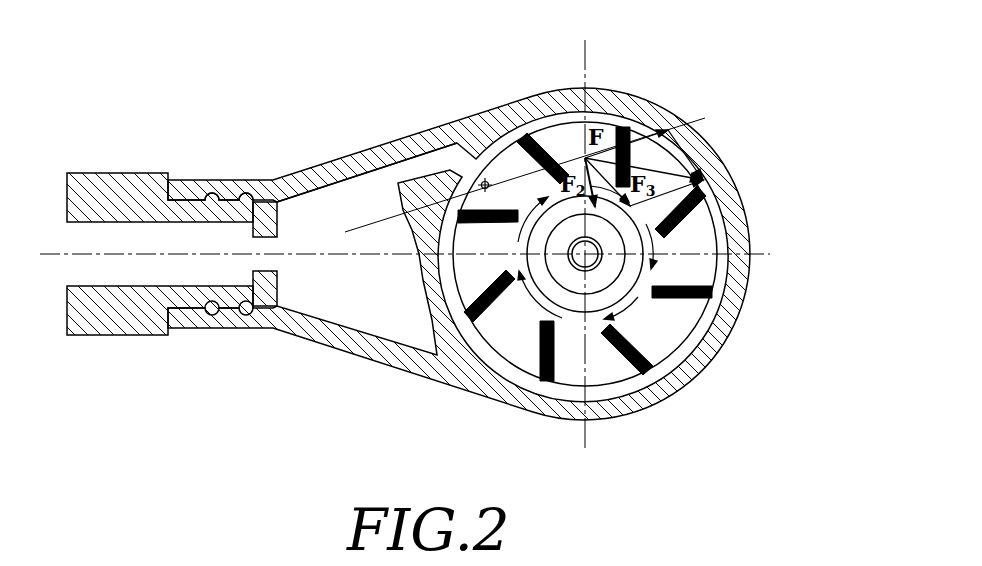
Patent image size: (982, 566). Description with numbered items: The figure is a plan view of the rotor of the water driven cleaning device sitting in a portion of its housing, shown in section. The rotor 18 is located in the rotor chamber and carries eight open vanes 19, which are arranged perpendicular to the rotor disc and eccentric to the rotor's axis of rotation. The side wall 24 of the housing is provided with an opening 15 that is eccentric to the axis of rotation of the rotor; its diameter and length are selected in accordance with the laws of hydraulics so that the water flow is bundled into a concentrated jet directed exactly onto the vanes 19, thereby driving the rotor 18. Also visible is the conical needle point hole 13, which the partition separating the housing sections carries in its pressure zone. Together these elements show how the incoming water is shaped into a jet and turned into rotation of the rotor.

The conical needle point hole 13 is at (466, 190).
The opening 15 is at (445, 158).
The rotor 18 is at (703, 245).
The open vanes 19 is at (713, 278).
The side wall 24 is at (440, 188).